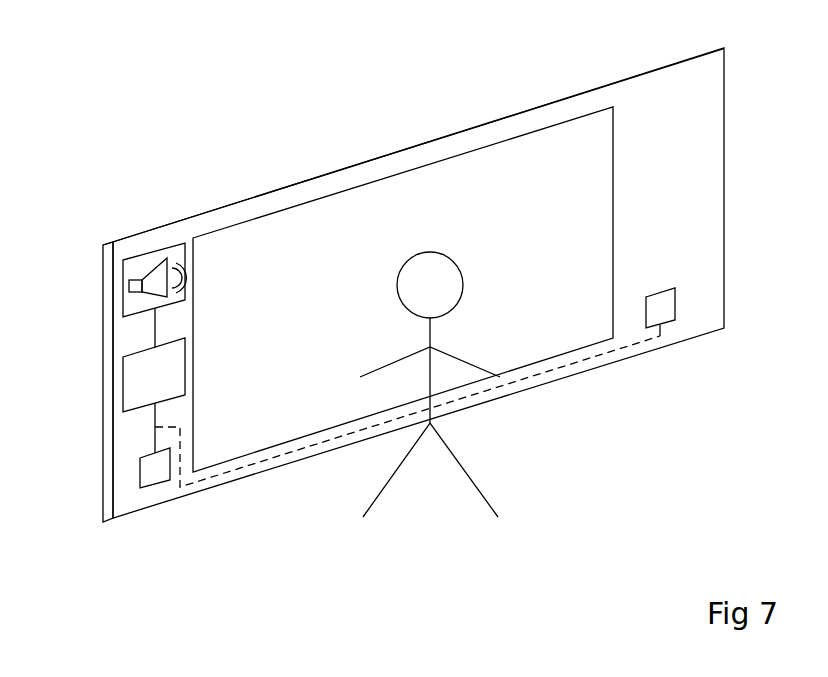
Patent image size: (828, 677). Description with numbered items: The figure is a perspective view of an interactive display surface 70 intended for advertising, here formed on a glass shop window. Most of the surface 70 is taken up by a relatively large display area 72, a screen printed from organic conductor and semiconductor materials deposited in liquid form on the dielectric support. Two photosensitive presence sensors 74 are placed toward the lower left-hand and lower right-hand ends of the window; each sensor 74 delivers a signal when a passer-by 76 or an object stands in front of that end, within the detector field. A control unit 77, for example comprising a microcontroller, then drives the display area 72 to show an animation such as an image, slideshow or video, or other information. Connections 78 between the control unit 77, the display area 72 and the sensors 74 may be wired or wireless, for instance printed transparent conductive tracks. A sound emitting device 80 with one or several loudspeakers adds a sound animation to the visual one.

The interactive display surface 70 is at (240, 213).
The display area 72 is at (532, 148).
The photosensitive presence sensor 74 is at (160, 478).
The passer-by 76 is at (462, 358).
The control unit 77 is at (133, 366).
The connections 78 is at (260, 462).
The sound emitting device 80 is at (135, 267).